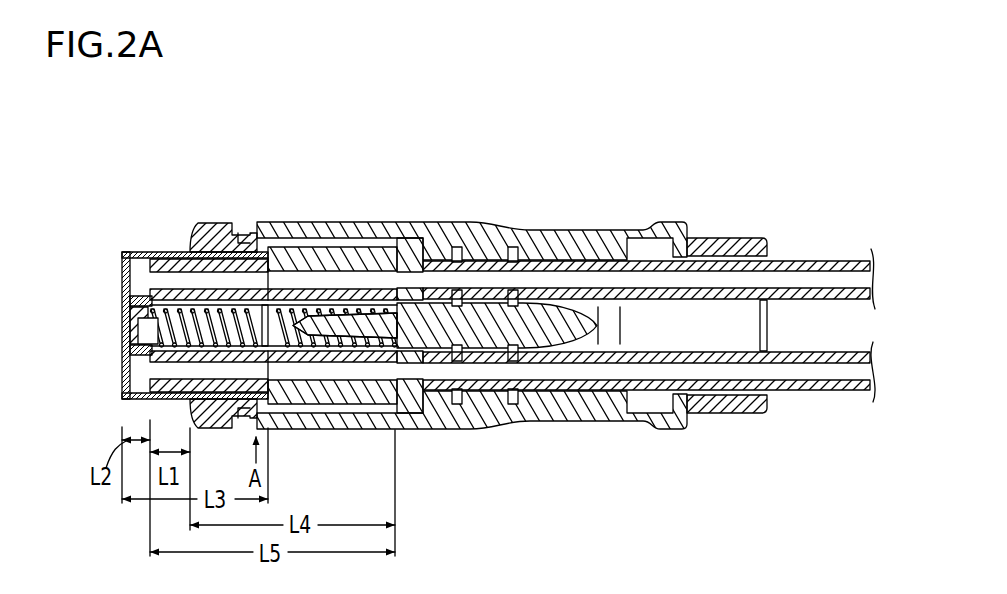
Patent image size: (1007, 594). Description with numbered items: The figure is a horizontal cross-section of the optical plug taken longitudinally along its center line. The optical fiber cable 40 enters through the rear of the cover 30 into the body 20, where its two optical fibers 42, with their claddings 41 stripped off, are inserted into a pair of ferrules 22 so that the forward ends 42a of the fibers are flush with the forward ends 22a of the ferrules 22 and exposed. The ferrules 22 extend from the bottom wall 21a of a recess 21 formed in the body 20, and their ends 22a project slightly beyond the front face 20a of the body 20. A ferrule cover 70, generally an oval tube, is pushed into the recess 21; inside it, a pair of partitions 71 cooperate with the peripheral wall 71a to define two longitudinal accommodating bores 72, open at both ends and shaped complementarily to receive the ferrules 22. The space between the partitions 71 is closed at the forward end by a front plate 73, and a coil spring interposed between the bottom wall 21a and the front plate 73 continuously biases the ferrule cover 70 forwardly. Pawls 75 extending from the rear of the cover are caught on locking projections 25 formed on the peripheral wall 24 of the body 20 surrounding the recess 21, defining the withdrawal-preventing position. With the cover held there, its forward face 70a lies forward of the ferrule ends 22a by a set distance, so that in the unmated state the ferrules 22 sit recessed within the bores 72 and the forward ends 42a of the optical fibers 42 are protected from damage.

The body 20 is at (553, 242).
The front face of the body 20a is at (126, 428).
The recess 21 is at (191, 244).
The bottom wall of the recess 21a is at (377, 300).
The ferrule 22 is at (376, 405).
The forward end of the ferrule 22a is at (148, 357).
The peripheral wall of the body 24 is at (222, 223).
The locking projection 25 is at (242, 418).
The cover 30 is at (647, 223).
The optical fiber cable 40 is at (837, 350).
The cladding 41 is at (801, 390).
The optical fiber 42 is at (638, 292).
The forward end of the optical fiber 42a is at (148, 370).
The ferrule cover 70 is at (137, 251).
The forward face of the ferrule cover 70a is at (120, 282).
The partition 71 is at (147, 349).
The peripheral wall of the ferrule cover 71a is at (155, 400).
The accommodating bore 72 is at (122, 390).
The front plate 73 is at (128, 323).
The pawl 75 is at (270, 402).